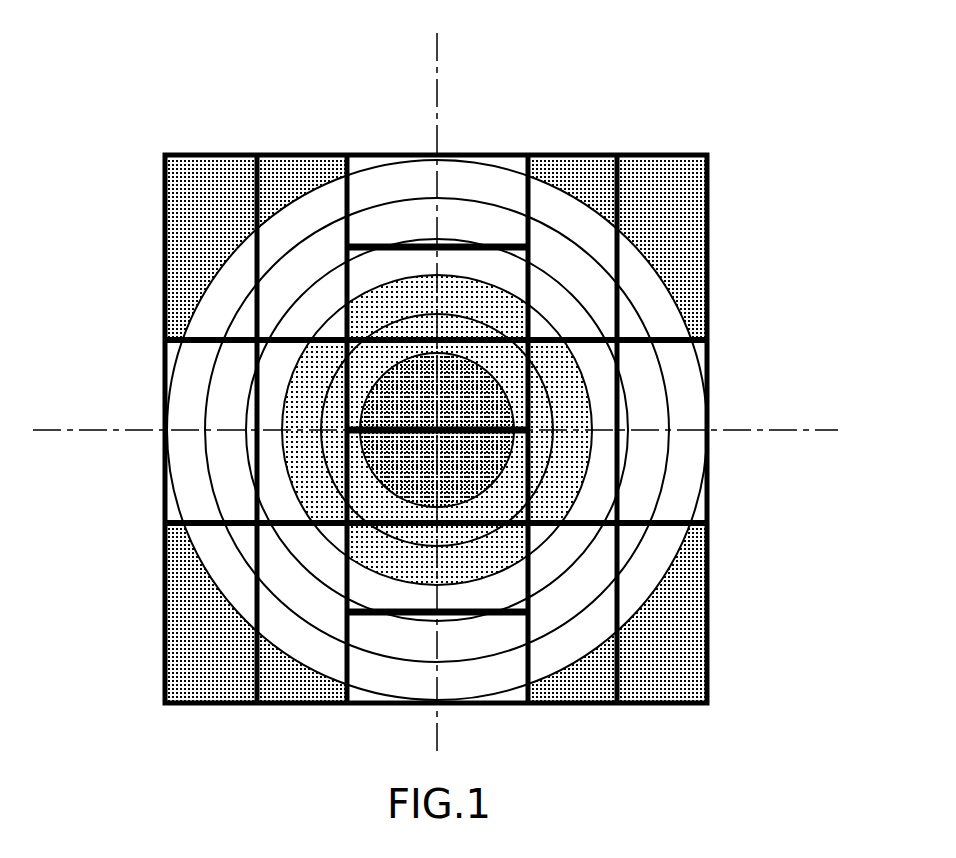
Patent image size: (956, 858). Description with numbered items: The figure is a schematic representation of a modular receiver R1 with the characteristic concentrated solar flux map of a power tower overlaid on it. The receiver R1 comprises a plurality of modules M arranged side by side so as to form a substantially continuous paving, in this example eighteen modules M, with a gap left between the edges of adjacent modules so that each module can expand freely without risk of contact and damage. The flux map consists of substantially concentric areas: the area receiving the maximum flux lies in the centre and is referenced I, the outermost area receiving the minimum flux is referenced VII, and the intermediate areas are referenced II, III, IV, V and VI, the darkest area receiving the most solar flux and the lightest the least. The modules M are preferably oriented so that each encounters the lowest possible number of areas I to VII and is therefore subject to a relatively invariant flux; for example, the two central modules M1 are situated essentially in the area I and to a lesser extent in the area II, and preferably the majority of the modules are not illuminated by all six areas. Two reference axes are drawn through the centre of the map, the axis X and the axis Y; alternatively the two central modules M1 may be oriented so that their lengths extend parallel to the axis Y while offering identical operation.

The maximum flux area I is at (477, 338).
The intermediate flux area II is at (418, 323).
The intermediate flux area III is at (382, 297).
The intermediate flux area IV is at (318, 300).
The intermediate flux area V is at (280, 277).
The intermediate flux area VI is at (230, 270).
The minimum flux area VII is at (207, 187).
The module M is at (585, 280).
The central module M1 is at (372, 493).
The modular receiver R1 is at (750, 220).
The X axis X is at (812, 430).
The Y axis Y is at (438, 47).